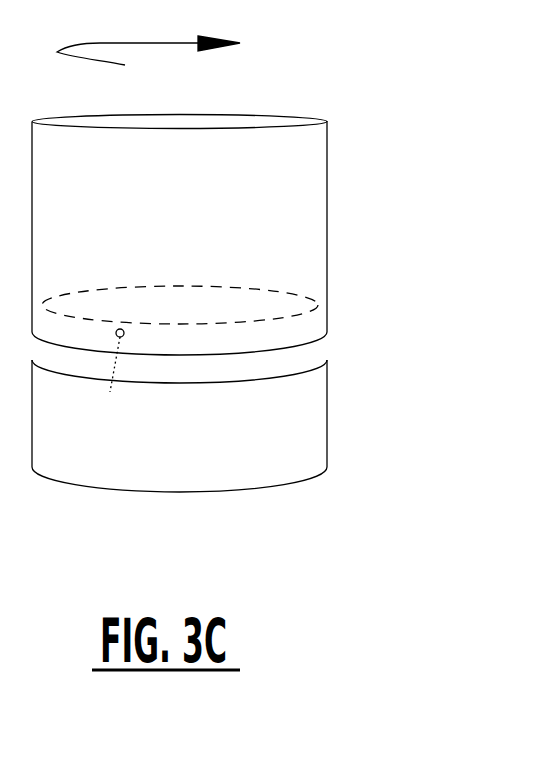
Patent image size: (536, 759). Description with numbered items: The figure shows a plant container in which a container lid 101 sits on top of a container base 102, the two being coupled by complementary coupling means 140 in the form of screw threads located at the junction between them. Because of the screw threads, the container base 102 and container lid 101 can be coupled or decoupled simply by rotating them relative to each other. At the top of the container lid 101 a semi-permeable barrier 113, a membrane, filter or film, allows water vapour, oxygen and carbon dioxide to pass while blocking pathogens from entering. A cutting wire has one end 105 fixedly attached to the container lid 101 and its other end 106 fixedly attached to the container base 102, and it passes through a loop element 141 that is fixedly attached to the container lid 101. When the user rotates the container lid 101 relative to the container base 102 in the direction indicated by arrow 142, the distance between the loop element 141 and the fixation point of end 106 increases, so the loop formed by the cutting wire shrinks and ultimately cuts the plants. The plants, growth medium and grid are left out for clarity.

The container lid 101 is at (327, 213).
The container base 102 is at (327, 410).
The end of cutting wire 105 is at (53, 315).
The end of cutting wire 106 is at (112, 392).
The semi-permeable barrier 113 is at (272, 123).
The complementary coupling means 140 is at (329, 342).
The loop element 141 is at (120, 329).
The arrow 142 is at (148, 34).